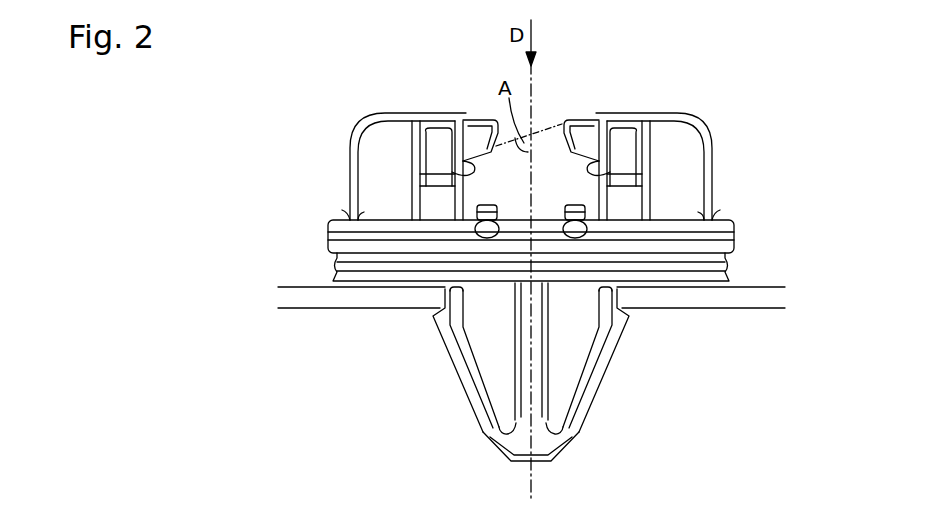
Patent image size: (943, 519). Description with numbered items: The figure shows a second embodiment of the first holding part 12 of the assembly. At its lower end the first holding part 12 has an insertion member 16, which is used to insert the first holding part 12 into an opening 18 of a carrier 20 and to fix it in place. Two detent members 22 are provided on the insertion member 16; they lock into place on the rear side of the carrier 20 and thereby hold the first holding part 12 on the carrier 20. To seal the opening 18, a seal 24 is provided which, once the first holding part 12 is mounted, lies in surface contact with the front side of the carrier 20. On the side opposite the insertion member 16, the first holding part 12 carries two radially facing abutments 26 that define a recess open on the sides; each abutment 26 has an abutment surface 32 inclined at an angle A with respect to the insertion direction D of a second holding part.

The first holding part 12 is at (716, 84).
The insertion member 16 is at (551, 443).
The opening 18 is at (490, 298).
The carrier 20 is at (322, 298).
The detent members 22 is at (448, 322).
The seal 24 is at (700, 275).
The abutments 26 is at (479, 99).
The abutment surface 32 is at (462, 175).